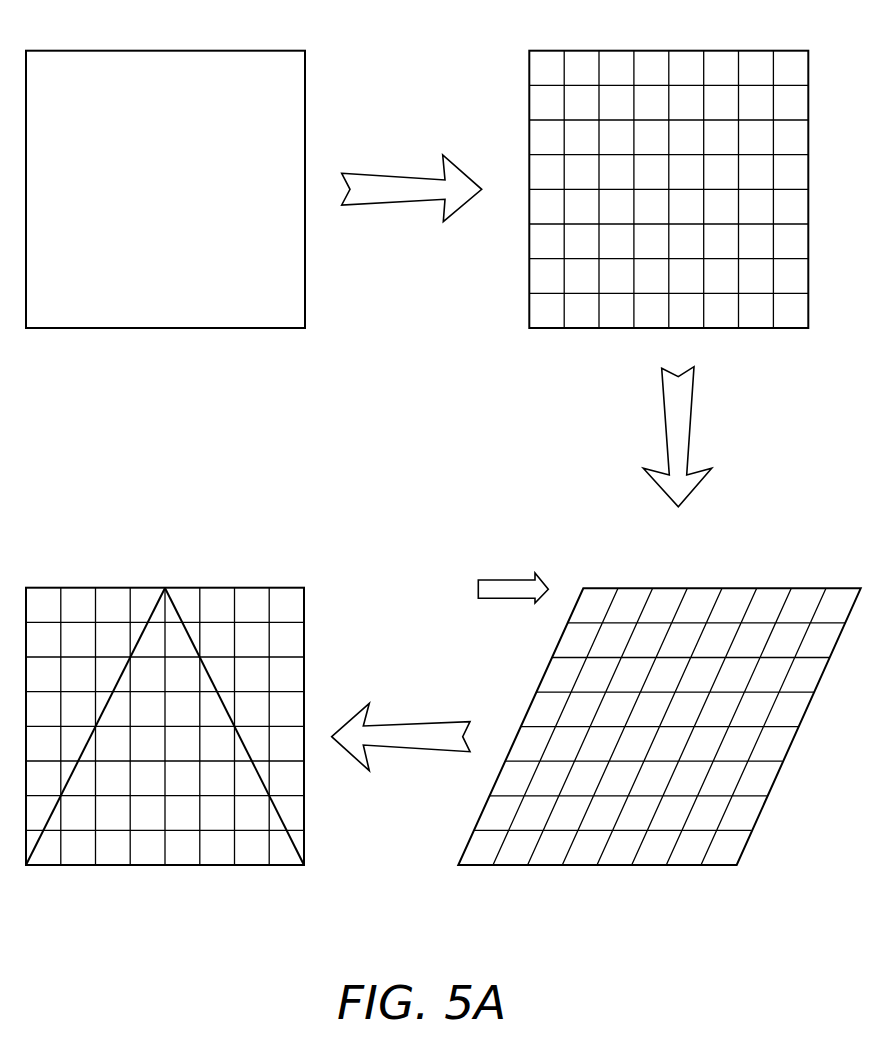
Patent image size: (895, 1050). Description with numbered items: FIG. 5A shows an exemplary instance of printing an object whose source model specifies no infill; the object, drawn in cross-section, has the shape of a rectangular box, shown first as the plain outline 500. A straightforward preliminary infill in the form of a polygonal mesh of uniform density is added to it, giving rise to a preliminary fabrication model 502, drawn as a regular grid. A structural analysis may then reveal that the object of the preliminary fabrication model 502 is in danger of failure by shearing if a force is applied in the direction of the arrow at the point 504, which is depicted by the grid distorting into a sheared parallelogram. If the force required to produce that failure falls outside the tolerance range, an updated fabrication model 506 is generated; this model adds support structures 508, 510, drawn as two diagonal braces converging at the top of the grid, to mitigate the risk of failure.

The original image 500 is at (288, 50).
The preliminary fabrication model 502 is at (792, 48).
The point 504 is at (585, 585).
The updated fabrication model 506 is at (288, 587).
The support structure 508 is at (152, 613).
The support structure 510 is at (178, 612).